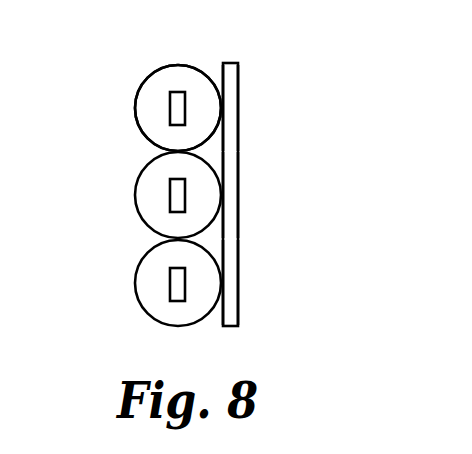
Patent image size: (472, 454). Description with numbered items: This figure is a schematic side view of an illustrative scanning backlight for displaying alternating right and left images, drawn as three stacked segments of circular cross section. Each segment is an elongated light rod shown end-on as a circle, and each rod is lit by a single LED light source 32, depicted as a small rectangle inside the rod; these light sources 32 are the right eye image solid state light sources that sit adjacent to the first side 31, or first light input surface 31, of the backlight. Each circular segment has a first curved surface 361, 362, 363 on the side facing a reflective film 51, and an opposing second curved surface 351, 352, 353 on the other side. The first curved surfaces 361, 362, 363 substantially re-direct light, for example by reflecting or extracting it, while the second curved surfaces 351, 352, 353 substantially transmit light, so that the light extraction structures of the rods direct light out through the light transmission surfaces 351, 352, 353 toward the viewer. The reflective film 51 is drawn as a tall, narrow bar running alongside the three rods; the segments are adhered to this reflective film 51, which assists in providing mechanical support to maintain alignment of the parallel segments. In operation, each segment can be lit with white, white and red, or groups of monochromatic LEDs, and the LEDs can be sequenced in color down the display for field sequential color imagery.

The first side 31 is at (157, 80).
The first light source 32 is at (173, 108).
The second curved surface 351 is at (134, 113).
The second curved surface 352 is at (134, 196).
The second curved surface 353 is at (134, 285).
The reflective film 51 is at (228, 83).
The first curved surface 361 is at (228, 106).
The first curved surface 362 is at (228, 196).
The first curved surface 363 is at (228, 285).